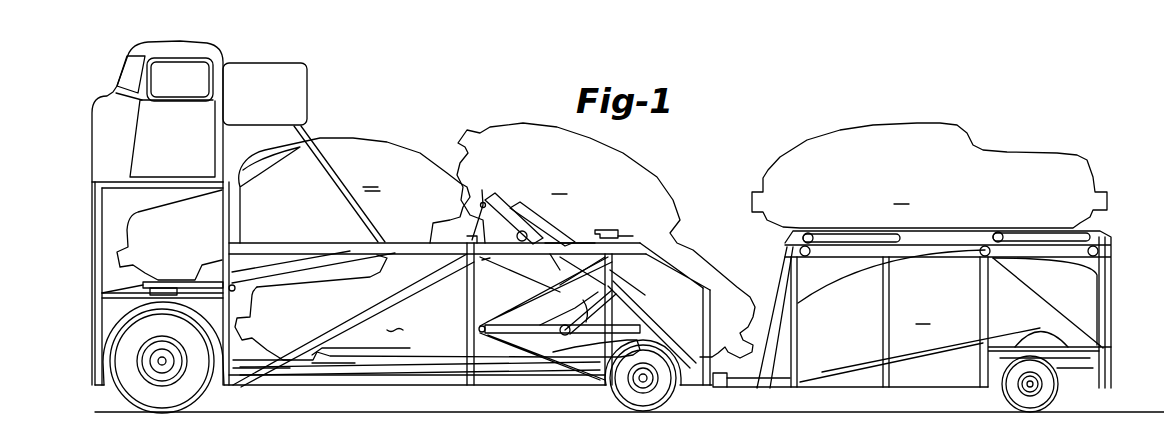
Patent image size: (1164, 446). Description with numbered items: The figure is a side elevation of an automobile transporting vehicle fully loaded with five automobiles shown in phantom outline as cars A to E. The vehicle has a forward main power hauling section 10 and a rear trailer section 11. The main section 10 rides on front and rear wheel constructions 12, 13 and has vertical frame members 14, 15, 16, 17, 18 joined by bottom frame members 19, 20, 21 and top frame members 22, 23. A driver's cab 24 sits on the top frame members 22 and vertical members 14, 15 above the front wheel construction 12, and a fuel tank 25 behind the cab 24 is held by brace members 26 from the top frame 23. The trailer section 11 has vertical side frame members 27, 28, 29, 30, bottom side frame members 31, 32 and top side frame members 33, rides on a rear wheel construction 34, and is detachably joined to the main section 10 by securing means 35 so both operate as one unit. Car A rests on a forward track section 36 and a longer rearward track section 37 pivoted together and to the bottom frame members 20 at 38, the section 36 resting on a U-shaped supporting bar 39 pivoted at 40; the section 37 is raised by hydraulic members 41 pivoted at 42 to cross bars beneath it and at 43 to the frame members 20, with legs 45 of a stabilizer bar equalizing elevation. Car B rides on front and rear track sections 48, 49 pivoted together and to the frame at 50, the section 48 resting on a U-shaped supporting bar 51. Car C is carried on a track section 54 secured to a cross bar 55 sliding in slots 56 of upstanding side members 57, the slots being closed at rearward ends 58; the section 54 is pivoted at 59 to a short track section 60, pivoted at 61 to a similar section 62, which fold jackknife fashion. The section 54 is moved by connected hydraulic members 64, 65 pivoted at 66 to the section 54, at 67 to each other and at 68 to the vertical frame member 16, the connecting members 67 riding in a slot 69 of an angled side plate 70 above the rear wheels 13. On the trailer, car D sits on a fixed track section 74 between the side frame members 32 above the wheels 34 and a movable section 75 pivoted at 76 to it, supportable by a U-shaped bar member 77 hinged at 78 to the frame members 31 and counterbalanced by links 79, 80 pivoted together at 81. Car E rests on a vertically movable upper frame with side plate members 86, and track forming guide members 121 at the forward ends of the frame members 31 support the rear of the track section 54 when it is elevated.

The main power hauling section 10 is at (97, 91).
The trailer section 11 is at (1108, 225).
The front wheel construction 12 is at (198, 392).
The rear wheel construction 13 is at (670, 393).
The vertically extending frame forming member 14 is at (96, 253).
The vertically extending frame forming member 15 is at (229, 225).
The vertically extending frame forming member 16 is at (467, 301).
The vertically extending frame forming member 17 is at (608, 270).
The vertically extending frame forming member 18 is at (701, 299).
The bottom frame forming member 19 is at (100, 302).
The bottom frame forming member 20 is at (455, 390).
The bottom frame forming member 21 is at (625, 345).
The top frame forming member 22 is at (172, 185).
The top frame forming member 23 is at (318, 232).
The driver's cab 24 is at (187, 139).
The fuel tank 25 is at (307, 85).
The brace members 26 is at (300, 134).
The side frame forming member 27 is at (787, 280).
The side frame forming member 28 is at (883, 317).
The side frame forming member 29 is at (986, 306).
The side frame forming member 30 is at (1110, 338).
The bottom side frame forming member 31 is at (935, 388).
The bottom side frame forming member 32 is at (1058, 342).
The top side frame forming member 33 is at (912, 250).
The wheel construction 34 is at (1055, 393).
The securing means 35 is at (722, 388).
The forward track section 36 is at (336, 368).
The rearward track section 37 is at (428, 386).
The pivot connection 38 is at (357, 388).
The U-shaped supporting bar 39 is at (252, 360).
The pivot connection 40 is at (272, 386).
The hydraulically operated extensible members 41 is at (572, 386).
The pivot connection 42 is at (550, 387).
The pivot connection 43 is at (598, 388).
The stabilizer bar legs 45 is at (530, 385).
The forward track section 48 is at (197, 297).
The rearward track section 49 is at (300, 268).
The pivot connection 50 is at (235, 289).
The U-shaped supporting bar 51 is at (143, 298).
The track section 54 is at (565, 308).
The cross bar 55 is at (540, 232).
The slots 56 is at (596, 234).
The upstanding side members 57 is at (573, 240).
The closed rearward ends 58 is at (614, 233).
The pivot connection 59 is at (485, 203).
The short track section 60 is at (486, 222).
The pivot connection 61 is at (512, 247).
The track section 62 is at (481, 255).
The hydraulic member 64 is at (622, 322).
The hydraulic member 65 is at (538, 332).
The pivot connection 66 is at (664, 328).
The pivotal connecting member 67 is at (563, 330).
The pivot connection 68 is at (480, 328).
The slot 69 is at (592, 302).
The side plate 70 is at (588, 348).
The fixed track section 74 is at (1002, 347).
The movable track section 75 is at (932, 358).
The pivot connection 76 is at (975, 350).
The U-shaped bar member 77 is at (832, 388).
The hinge 78 is at (853, 388).
The counterbalancing link 79 is at (916, 364).
The counterbalancing link 80 is at (912, 361).
The pivot connection 81 is at (884, 388).
The side plate members 86 is at (985, 210).
The track forming guide members 121 is at (776, 387).